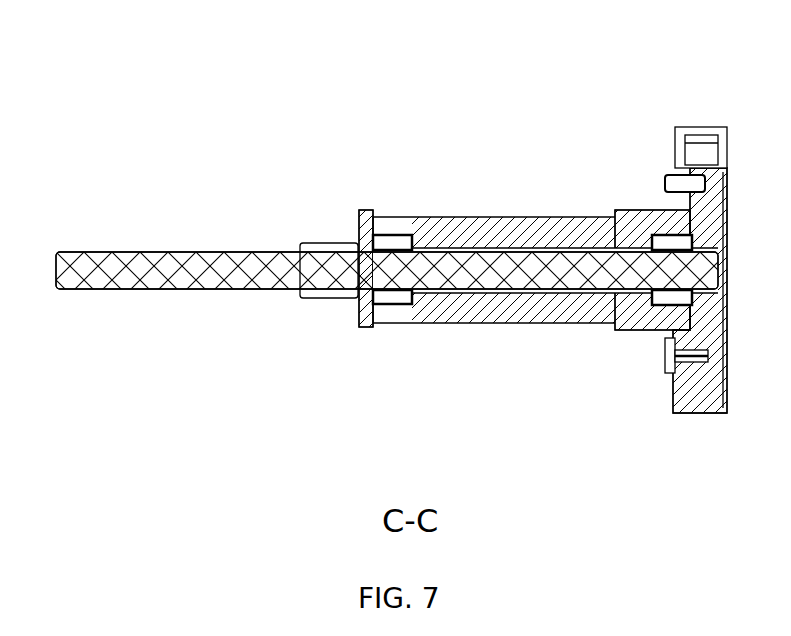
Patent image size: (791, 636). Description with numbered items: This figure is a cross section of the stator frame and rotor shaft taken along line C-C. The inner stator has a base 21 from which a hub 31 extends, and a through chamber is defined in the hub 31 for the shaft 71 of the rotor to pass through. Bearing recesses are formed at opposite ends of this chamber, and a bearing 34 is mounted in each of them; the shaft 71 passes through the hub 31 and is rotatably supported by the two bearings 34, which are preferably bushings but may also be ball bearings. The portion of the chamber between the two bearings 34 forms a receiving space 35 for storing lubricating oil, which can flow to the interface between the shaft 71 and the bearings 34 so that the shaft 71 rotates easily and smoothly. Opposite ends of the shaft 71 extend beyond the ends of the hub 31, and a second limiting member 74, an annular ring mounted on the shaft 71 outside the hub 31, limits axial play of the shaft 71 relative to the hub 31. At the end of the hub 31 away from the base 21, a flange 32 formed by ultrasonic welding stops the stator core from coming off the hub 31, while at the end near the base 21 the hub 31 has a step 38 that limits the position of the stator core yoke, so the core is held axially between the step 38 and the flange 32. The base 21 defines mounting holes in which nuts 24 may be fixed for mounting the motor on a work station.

The shaft 71 is at (130, 268).
The second limiting member 74 is at (330, 243).
The bearing 34 is at (392, 235).
The hub 31 is at (468, 238).
The step 38 is at (607, 212).
The nut 24 is at (696, 127).
The flange 32 is at (367, 323).
The receiving space 35 is at (545, 292).
The base 21 is at (708, 398).